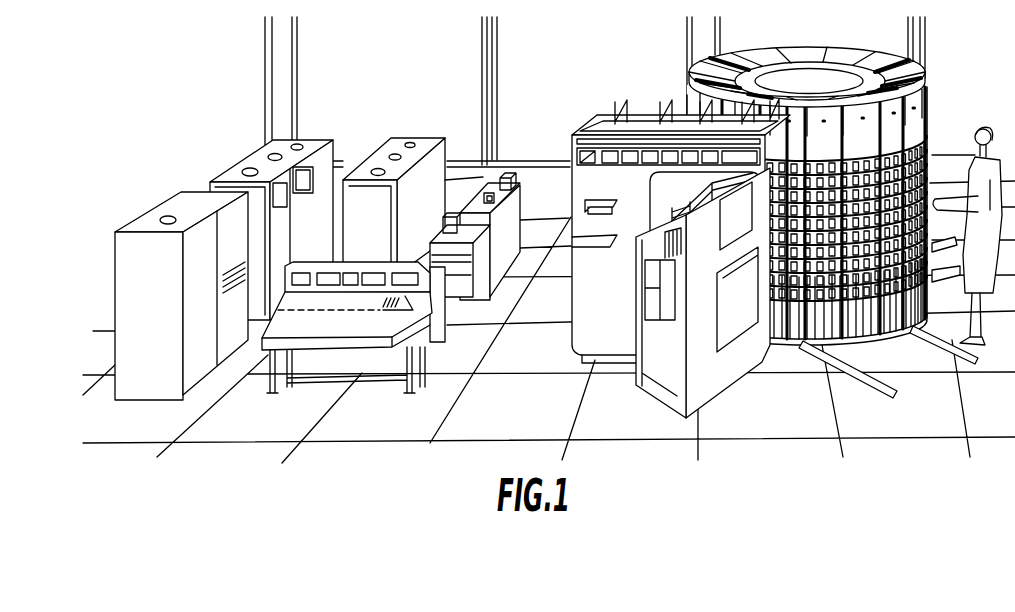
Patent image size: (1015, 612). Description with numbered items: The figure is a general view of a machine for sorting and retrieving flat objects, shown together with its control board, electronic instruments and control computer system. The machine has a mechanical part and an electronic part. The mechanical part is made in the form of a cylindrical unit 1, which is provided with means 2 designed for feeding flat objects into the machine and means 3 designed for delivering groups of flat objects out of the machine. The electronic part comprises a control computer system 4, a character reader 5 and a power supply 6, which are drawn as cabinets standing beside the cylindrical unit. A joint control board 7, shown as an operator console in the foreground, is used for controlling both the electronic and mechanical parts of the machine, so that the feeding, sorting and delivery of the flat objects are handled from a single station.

The cylindrical unit 1 is at (912, 120).
The means for feeding flat objects 2 is at (708, 382).
The means for delivering groups of flat objects 3 is at (610, 158).
The control computer system 4 is at (257, 162).
The character reader 5 is at (425, 172).
The power supply 6 is at (438, 160).
The joint control board 7 is at (337, 302).